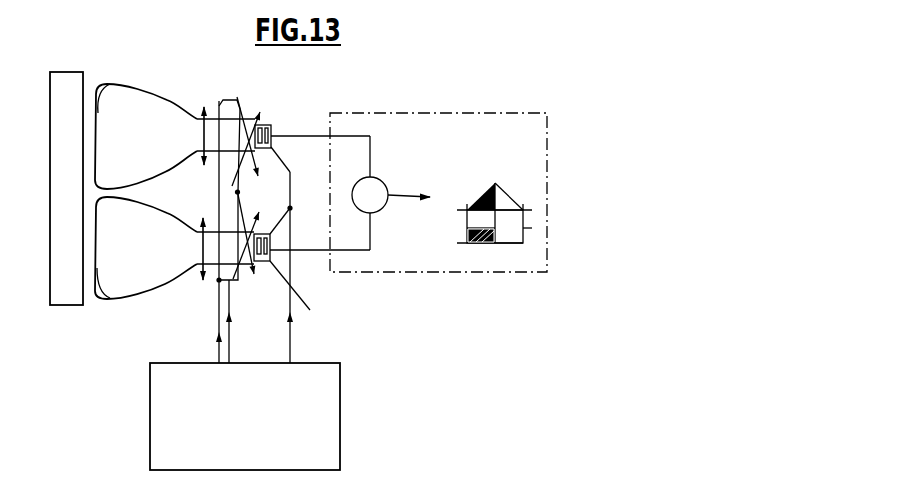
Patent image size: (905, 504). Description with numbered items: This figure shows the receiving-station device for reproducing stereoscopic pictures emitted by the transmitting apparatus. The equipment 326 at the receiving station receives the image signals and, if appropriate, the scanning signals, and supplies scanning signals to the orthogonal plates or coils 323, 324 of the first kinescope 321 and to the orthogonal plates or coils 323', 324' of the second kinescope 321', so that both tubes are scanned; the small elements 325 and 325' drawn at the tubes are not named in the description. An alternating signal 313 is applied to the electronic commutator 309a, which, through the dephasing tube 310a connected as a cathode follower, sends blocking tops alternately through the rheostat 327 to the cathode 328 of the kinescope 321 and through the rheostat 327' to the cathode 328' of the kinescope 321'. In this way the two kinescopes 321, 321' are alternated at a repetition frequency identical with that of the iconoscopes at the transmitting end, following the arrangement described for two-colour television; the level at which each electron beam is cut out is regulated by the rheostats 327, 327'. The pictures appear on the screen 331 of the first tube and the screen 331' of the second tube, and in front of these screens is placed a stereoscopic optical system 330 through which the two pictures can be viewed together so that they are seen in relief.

The stereoscopic optical system 330 is at (67, 71).
The screen of kinescope 321 331 is at (123, 81).
The kinescope 321 is at (147, 126).
The orthogonal plates or coils 324 is at (237, 126).
The orthogonal plates or coils 323 is at (267, 121).
The first photodetector 325 is at (298, 107).
The rheostat 327 is at (320, 136).
The cathode of kinescope 321 328 is at (295, 159).
The kinescope 321' is at (146, 262).
The screen of kinescope 321' 331' is at (123, 308).
The orthogonal plates or coils 324' is at (261, 232).
The orthogonal plates or coils 323' is at (254, 253).
The second photodetector 325' is at (296, 232).
The rheostat 327' is at (320, 256).
The cathode of kinescope 321' 328' is at (314, 293).
The dephasing tube 310a is at (371, 183).
The electronic commutator 309a is at (528, 146).
The alternating signal 313 is at (527, 197).
The equipment at the receiving station 326 is at (341, 410).